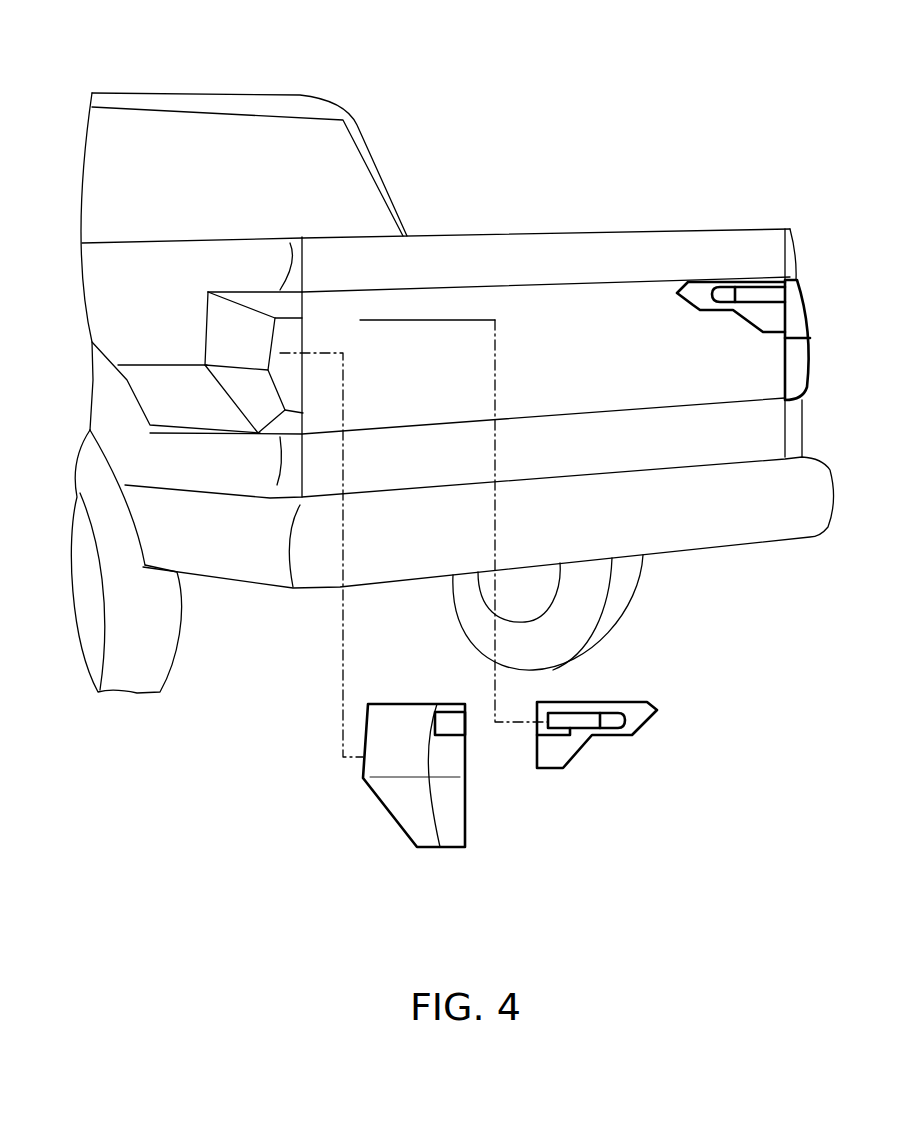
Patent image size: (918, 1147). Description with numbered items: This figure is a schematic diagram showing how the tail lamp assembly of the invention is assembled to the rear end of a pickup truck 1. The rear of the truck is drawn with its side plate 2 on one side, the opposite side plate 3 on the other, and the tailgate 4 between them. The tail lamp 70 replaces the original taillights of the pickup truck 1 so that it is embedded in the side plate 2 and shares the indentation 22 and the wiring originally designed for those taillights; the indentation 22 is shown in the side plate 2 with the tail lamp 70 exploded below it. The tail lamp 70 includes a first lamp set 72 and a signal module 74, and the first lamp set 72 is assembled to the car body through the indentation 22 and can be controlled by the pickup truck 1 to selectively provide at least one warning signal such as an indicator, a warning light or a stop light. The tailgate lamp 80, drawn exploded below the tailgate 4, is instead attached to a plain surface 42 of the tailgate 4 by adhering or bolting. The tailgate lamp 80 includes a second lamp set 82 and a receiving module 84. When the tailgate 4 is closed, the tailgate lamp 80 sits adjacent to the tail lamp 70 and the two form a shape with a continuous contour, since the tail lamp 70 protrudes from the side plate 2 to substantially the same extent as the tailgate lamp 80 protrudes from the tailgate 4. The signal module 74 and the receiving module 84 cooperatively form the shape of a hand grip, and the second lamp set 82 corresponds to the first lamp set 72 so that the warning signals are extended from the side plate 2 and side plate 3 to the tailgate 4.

The pickup truck 1 is at (588, 84).
The side plate 2 is at (123, 318).
The side plate 3 is at (793, 430).
The tailgate 4 is at (630, 297).
The indentation 22 is at (250, 331).
The plain surface 42 is at (338, 316).
The tail lamp 70 is at (472, 780).
The first lamp set 72 is at (457, 804).
The signal module 74 is at (462, 725).
The tailgate lamp 80 is at (652, 725).
The second lamp set 82 is at (570, 748).
The receiving module 84 is at (617, 720).